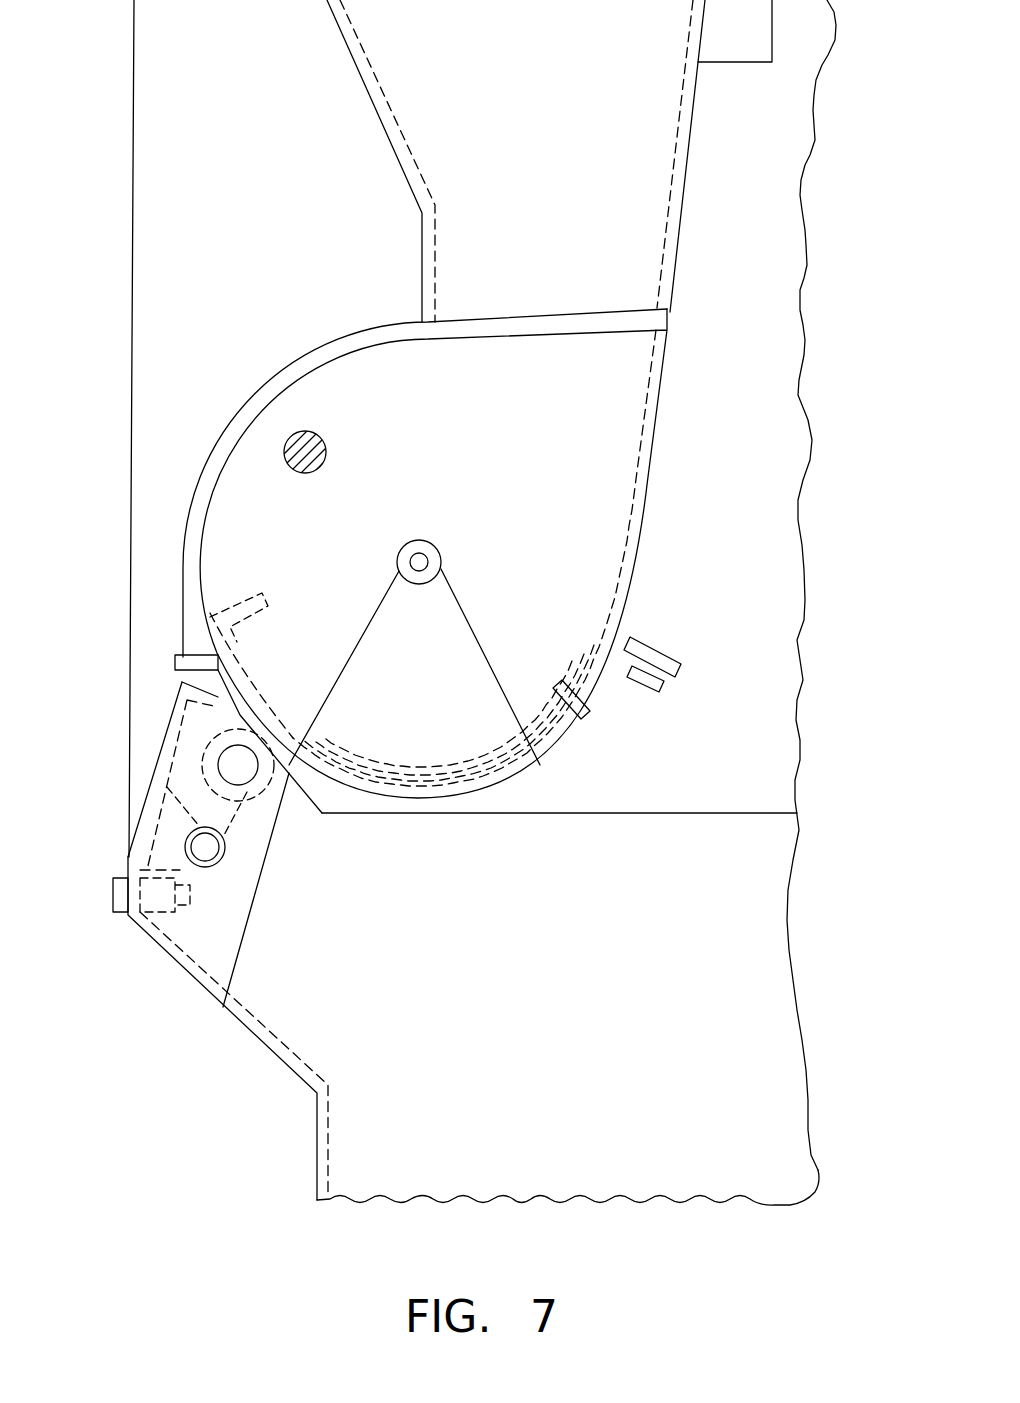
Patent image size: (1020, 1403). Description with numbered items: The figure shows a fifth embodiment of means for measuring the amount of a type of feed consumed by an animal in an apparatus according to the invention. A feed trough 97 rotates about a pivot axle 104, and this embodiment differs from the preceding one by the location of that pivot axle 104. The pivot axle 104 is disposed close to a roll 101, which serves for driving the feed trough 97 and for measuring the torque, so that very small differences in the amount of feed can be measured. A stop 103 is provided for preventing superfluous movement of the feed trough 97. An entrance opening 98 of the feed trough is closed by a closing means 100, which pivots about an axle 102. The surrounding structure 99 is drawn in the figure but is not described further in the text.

The feed trough 97 is at (518, 770).
The entrance opening 98 is at (281, 385).
The wall panel 99 is at (210, 952).
The closing means 100 is at (466, 722).
The roll 101 is at (213, 757).
The axle 102 is at (438, 556).
The stop 103 is at (643, 652).
The pivot axle 104 is at (315, 443).